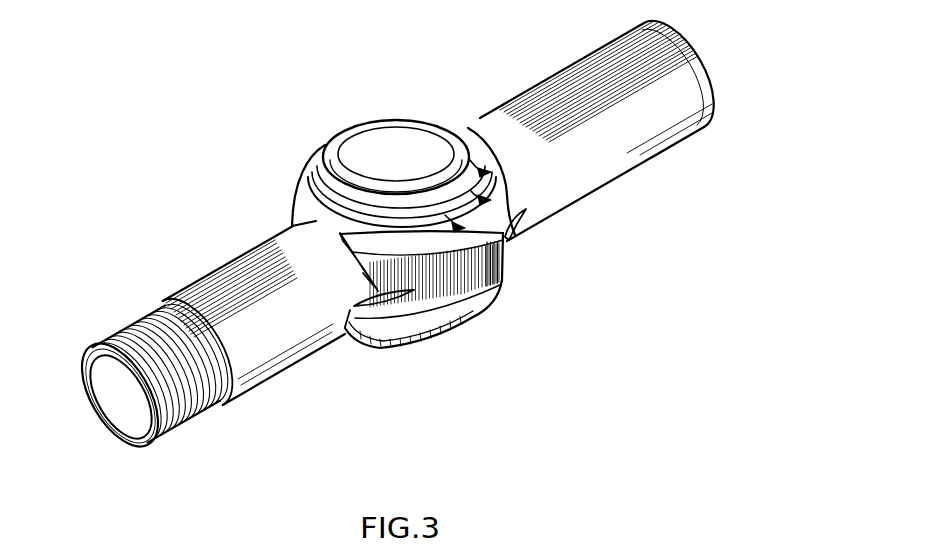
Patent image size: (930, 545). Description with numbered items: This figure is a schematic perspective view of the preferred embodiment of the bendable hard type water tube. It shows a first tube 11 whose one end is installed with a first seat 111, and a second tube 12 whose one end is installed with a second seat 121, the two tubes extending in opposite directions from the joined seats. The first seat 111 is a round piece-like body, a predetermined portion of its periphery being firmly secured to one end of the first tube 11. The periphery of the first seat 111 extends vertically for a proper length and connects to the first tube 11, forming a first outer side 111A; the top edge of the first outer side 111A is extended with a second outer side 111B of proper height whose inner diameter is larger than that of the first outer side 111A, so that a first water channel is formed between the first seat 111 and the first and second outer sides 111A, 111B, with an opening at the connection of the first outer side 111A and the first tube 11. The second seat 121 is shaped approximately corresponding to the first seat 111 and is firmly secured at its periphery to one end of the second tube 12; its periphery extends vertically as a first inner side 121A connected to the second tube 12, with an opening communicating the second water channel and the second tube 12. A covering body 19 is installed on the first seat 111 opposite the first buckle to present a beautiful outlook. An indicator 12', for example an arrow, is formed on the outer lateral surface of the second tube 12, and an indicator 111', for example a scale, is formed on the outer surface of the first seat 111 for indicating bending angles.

The first tube 11 is at (285, 253).
The second tube 12 is at (610, 131).
The indicator 12' is at (541, 81).
The covering body 19 is at (380, 140).
The first seat 111 is at (384, 163).
The indicator 111' is at (525, 250).
The first outer side 111A is at (472, 247).
The second outer side 111B is at (467, 267).
The second seat 121 is at (487, 333).
The first inner side 121A is at (440, 303).